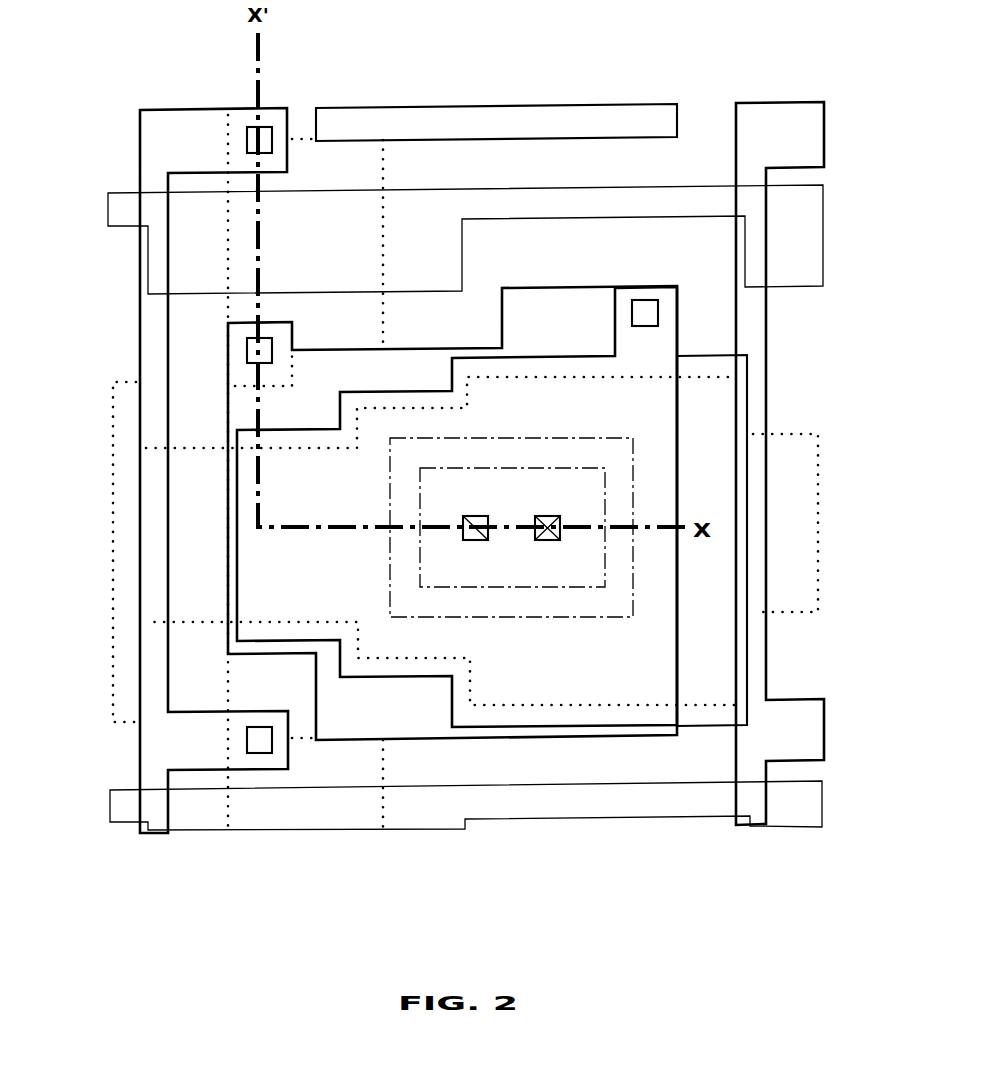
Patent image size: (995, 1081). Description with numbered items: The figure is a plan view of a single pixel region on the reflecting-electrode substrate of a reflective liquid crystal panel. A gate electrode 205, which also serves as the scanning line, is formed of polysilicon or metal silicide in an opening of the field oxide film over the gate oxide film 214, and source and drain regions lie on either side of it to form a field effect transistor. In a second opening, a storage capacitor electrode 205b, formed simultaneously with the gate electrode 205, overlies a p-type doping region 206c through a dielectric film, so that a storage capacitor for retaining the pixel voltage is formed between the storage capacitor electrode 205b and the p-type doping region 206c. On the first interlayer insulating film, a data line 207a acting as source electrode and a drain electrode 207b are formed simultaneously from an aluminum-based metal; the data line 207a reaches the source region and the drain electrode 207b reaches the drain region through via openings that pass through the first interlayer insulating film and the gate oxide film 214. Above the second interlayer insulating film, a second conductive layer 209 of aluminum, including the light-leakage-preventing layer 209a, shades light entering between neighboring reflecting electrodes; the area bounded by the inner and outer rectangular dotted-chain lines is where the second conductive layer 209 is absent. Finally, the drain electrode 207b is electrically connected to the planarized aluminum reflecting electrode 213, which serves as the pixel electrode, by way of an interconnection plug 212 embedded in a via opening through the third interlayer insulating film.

The gate electrode 205 is at (353, 212).
The storage capacitor electrode 205b is at (720, 408).
The p-type doping region 206c is at (185, 525).
The data line 207a is at (185, 130).
The drain electrode 207b is at (240, 403).
The second conductive layer 209 is at (567, 560).
The second conductive layer for preventing light leakage 209a is at (610, 767).
The interconnection plug 212 is at (548, 541).
The reflecting electrode 213 is at (465, 533).
The gate oxide film 214 is at (250, 352).